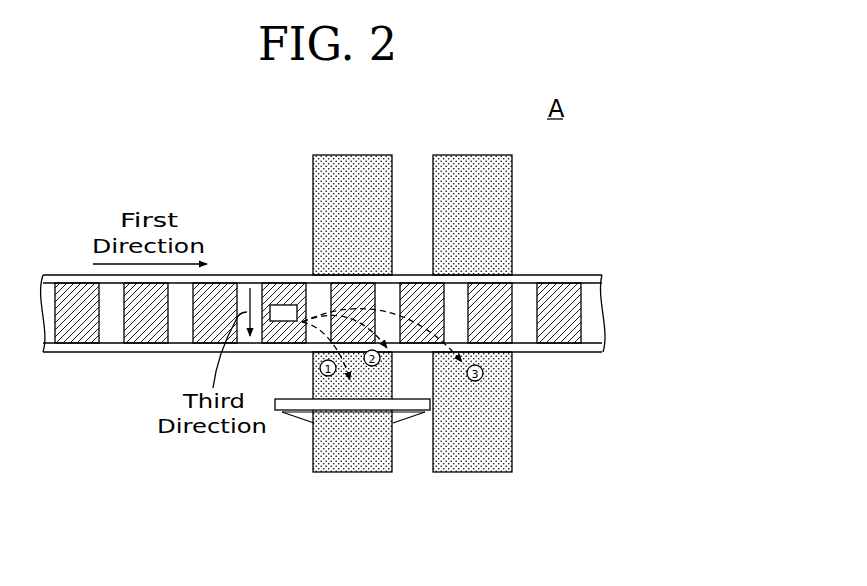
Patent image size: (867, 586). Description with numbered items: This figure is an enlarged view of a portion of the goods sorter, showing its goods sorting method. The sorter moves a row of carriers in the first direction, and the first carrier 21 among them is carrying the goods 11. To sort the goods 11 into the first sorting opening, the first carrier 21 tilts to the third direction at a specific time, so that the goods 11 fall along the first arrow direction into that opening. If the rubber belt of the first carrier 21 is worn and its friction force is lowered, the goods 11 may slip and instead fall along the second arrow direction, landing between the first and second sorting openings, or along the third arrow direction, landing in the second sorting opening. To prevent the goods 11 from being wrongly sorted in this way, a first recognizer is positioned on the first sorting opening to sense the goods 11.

The goods 11 is at (293, 304).
The first carrier 21 is at (268, 285).